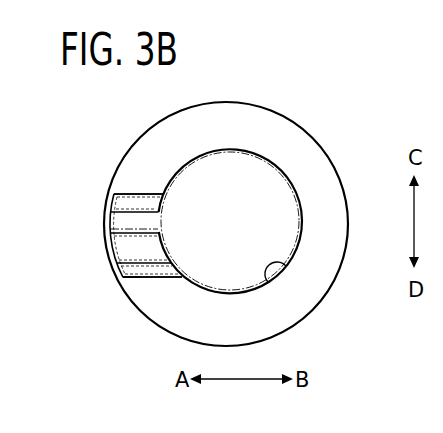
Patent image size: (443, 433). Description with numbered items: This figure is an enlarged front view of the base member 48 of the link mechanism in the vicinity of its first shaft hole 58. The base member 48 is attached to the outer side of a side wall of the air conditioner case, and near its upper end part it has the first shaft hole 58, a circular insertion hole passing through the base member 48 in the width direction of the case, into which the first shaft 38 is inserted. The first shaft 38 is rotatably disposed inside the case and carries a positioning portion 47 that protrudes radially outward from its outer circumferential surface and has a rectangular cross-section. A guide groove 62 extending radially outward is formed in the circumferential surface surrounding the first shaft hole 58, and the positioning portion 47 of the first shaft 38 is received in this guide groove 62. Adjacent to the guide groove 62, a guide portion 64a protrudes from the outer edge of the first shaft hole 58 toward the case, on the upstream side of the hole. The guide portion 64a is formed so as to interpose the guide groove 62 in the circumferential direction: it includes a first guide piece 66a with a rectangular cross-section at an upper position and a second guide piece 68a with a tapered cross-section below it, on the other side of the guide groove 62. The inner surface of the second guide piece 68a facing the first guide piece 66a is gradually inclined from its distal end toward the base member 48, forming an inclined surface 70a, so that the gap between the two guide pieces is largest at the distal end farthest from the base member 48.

The first shaft 38 is at (255, 197).
The base member 48 is at (263, 131).
The positioning portion 47 is at (136, 231).
The guide groove 62 is at (130, 233).
The first shaft hole 58 is at (284, 266).
The guide portion 64a is at (140, 281).
The first guide piece 66a is at (120, 202).
The second guide piece 68a is at (153, 272).
The inclined surface 70a is at (128, 248).